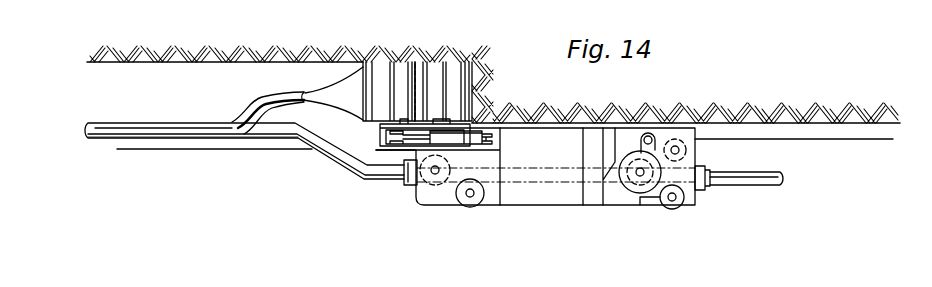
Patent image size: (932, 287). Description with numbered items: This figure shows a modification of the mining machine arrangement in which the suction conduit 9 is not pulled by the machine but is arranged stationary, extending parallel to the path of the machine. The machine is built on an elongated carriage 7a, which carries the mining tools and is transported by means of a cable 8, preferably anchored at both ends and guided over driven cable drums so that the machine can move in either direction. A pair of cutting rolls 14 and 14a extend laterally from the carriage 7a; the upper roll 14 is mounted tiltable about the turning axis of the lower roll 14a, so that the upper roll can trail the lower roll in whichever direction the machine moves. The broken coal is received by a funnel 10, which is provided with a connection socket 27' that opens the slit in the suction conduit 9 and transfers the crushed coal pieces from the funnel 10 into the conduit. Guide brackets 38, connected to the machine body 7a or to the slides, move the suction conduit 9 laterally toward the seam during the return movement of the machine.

The elongated carriage 7a is at (557, 197).
The cable 8 is at (198, 150).
The suction conduit 9 is at (142, 124).
The funnel 10 is at (330, 88).
The upper cutting roll 14 is at (388, 73).
The lower cutting roll 14a is at (446, 75).
The connection socket 27' is at (260, 105).
The guide brackets 38 is at (408, 183).